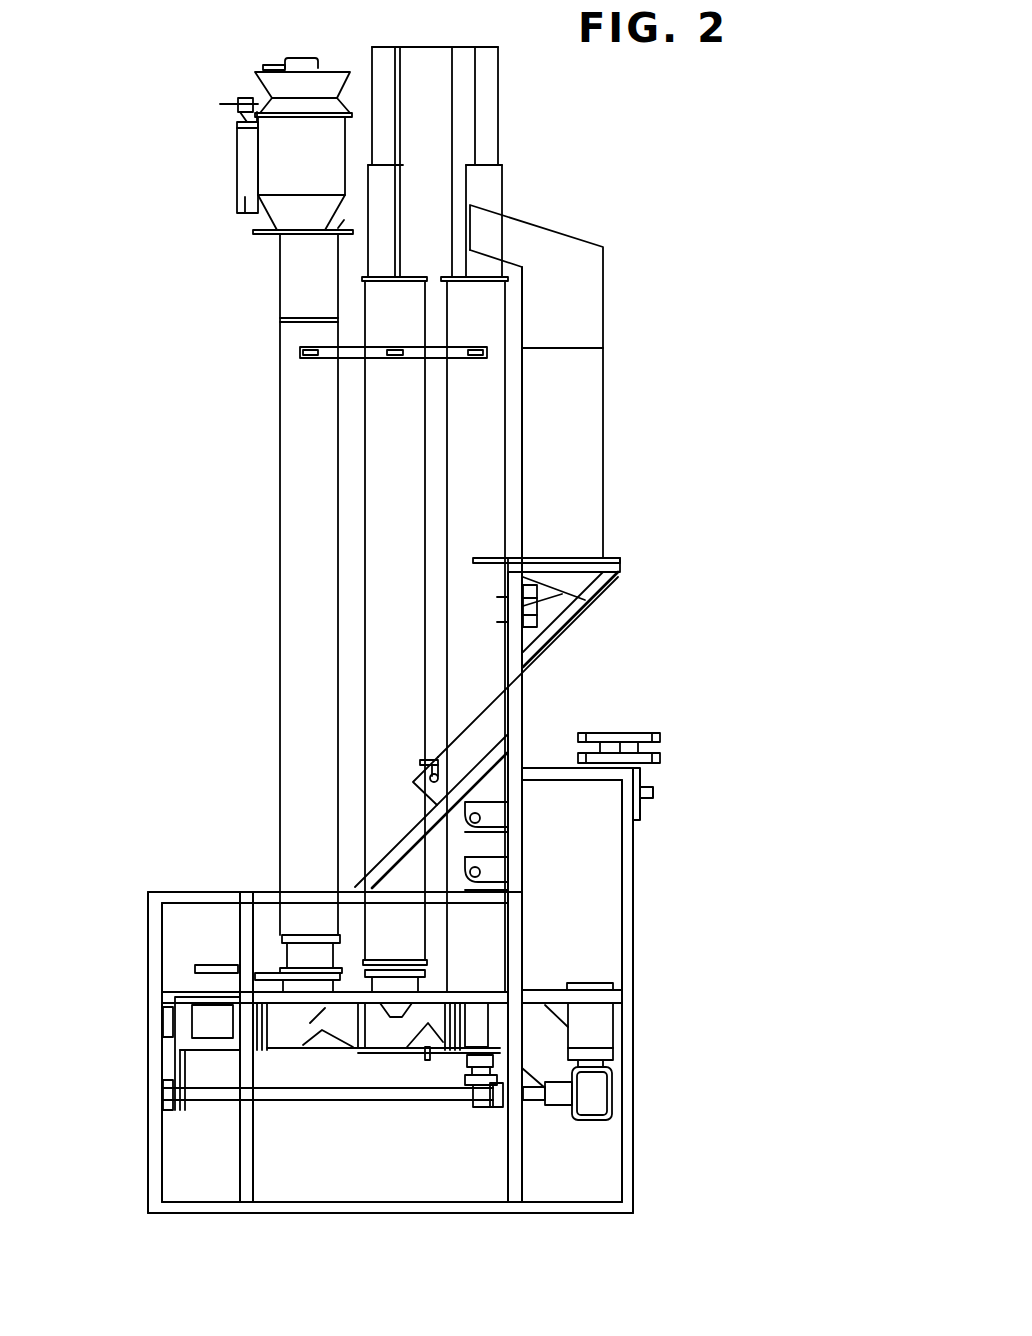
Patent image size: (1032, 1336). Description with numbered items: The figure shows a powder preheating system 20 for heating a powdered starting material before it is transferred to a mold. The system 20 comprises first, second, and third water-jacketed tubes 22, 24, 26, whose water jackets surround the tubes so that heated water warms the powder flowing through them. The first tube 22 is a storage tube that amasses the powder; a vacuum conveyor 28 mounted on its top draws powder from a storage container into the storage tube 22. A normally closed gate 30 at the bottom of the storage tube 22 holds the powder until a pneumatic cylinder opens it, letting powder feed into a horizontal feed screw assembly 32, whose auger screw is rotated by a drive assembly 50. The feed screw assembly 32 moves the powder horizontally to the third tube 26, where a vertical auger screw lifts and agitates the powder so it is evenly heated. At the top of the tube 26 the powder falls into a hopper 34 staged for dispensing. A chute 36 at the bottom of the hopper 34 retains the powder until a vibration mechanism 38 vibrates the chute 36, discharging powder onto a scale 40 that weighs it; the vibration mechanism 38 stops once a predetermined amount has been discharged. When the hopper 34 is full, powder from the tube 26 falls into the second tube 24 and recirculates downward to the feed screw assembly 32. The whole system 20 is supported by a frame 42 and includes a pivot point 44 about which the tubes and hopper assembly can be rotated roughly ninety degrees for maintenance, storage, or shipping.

The powder preheating system 20 is at (610, 171).
The first water-jacketed tube 22 is at (300, 473).
The second water-jacketed tube 24 is at (388, 570).
The third water-jacketed tube 26 is at (462, 665).
The vacuum conveyor 28 is at (272, 163).
The normally closed gate 30 is at (257, 977).
The horizontal feed screw assembly 32 is at (207, 1017).
The hopper 34 is at (590, 407).
The chute 36 is at (567, 595).
The vibration mechanism 38 is at (532, 630).
The scale 40 is at (645, 732).
The frame 42 is at (628, 1152).
The pivot point 44 is at (422, 762).
The drive assembly 50 is at (595, 1028).